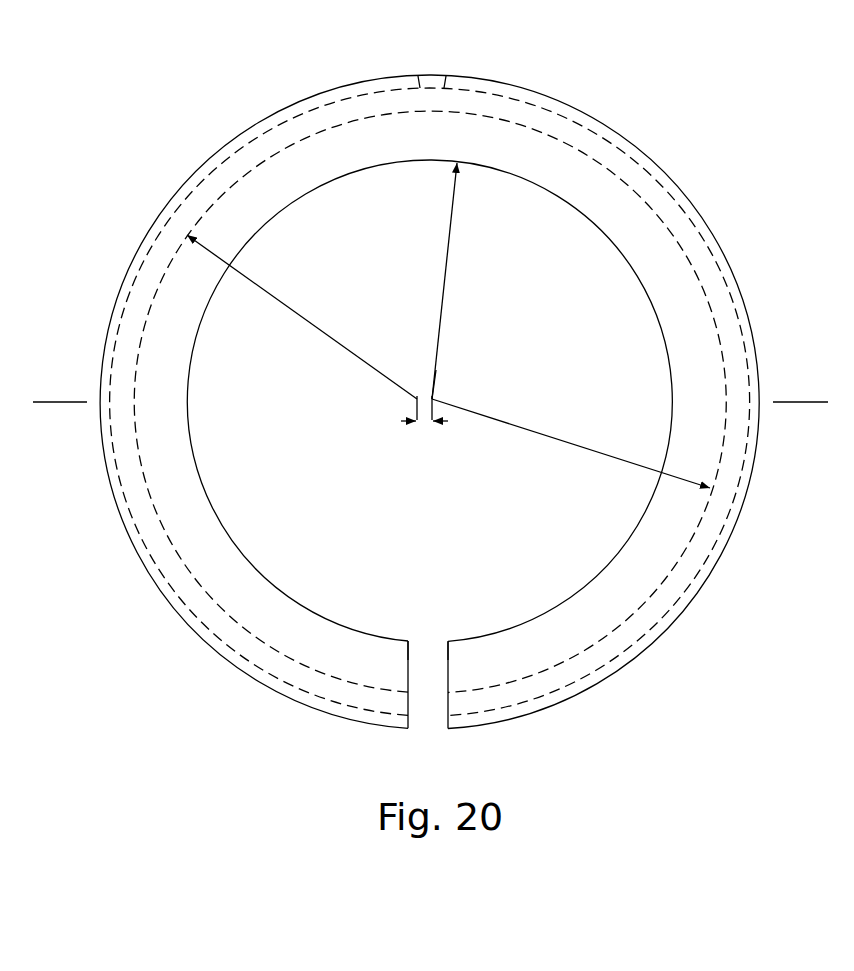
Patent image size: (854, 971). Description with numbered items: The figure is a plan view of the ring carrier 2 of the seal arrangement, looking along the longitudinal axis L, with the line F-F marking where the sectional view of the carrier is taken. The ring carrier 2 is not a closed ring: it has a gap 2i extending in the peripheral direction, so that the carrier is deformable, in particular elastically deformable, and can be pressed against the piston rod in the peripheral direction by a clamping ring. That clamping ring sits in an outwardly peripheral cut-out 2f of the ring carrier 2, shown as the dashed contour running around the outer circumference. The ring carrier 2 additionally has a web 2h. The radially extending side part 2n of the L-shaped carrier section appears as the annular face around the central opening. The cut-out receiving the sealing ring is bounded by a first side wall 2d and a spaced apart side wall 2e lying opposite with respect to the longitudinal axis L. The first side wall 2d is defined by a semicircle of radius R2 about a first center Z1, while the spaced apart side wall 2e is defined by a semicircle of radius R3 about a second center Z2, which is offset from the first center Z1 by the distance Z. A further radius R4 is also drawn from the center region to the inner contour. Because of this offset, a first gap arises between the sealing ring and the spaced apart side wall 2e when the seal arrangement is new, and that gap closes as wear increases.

The ring carrier 2 is at (600, 79).
The first side wall 2d is at (670, 239).
The spaced apart side wall 2e is at (137, 400).
The outwardly peripheral cut-out 2f is at (662, 181).
The web 2h is at (437, 76).
The gap 2i is at (428, 726).
The side part 2n is at (322, 642).
The radius R2 is at (570, 435).
The radius R3 is at (307, 317).
The radius R4 is at (452, 228).
The longitudinal axis L is at (436, 392).
The distance Z is at (424, 435).
The first center Z1 is at (436, 399).
The second center Z2 is at (415, 403).
The section line F- F is at (60, 404).